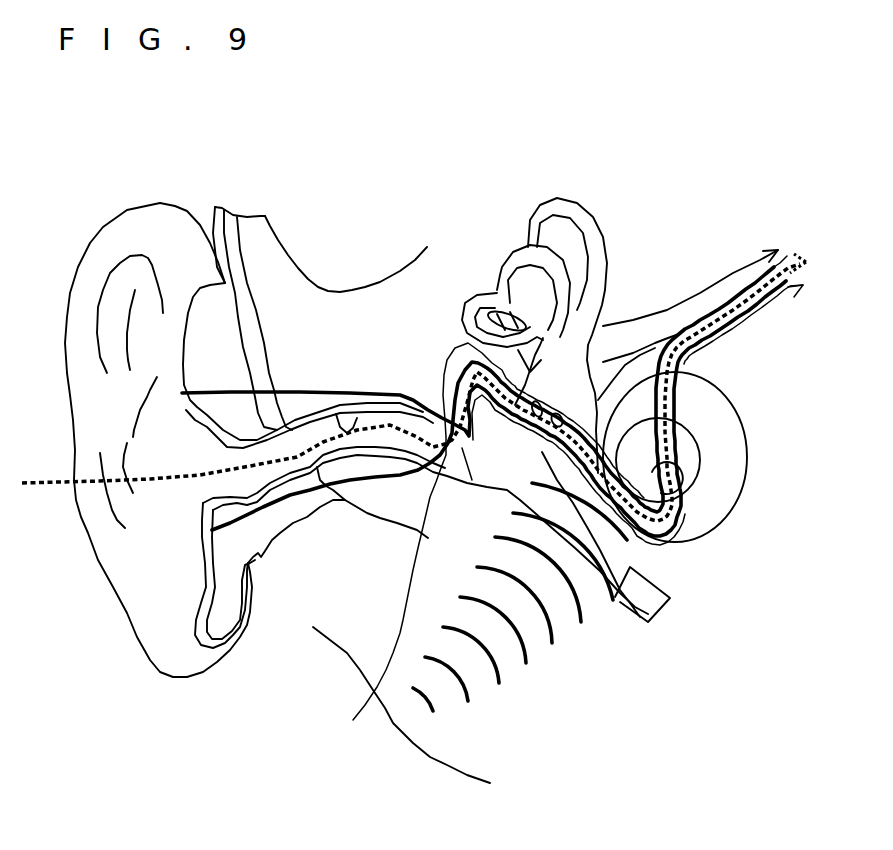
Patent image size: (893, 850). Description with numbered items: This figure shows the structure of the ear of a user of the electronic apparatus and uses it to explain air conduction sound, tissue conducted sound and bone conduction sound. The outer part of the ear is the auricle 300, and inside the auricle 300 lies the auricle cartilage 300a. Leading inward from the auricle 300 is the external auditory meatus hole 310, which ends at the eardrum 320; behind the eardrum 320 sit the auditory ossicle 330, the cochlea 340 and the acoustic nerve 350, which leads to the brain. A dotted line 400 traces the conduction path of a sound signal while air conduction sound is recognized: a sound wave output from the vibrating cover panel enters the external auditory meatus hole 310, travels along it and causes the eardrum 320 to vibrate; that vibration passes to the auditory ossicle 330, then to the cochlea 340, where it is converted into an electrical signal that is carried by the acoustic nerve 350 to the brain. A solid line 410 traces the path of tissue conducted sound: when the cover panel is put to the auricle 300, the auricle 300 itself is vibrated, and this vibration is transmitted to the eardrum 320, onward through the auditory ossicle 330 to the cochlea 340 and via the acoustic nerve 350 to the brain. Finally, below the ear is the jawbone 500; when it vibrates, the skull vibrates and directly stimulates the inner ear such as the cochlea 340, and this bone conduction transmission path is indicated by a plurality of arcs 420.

The auricle 300 is at (160, 230).
The auricle cartilage 300a is at (213, 337).
The external auditory meatus hole 310 is at (357, 428).
The eardrum 320 is at (478, 541).
The auditory ossicle 330 is at (487, 403).
The cochlea 340 is at (713, 513).
The acoustic nerve 350 is at (657, 322).
The dotted line 400 is at (43, 483).
The solid line 410 is at (200, 388).
The arcs 420 is at (668, 601).
The jawbone 500 is at (437, 762).